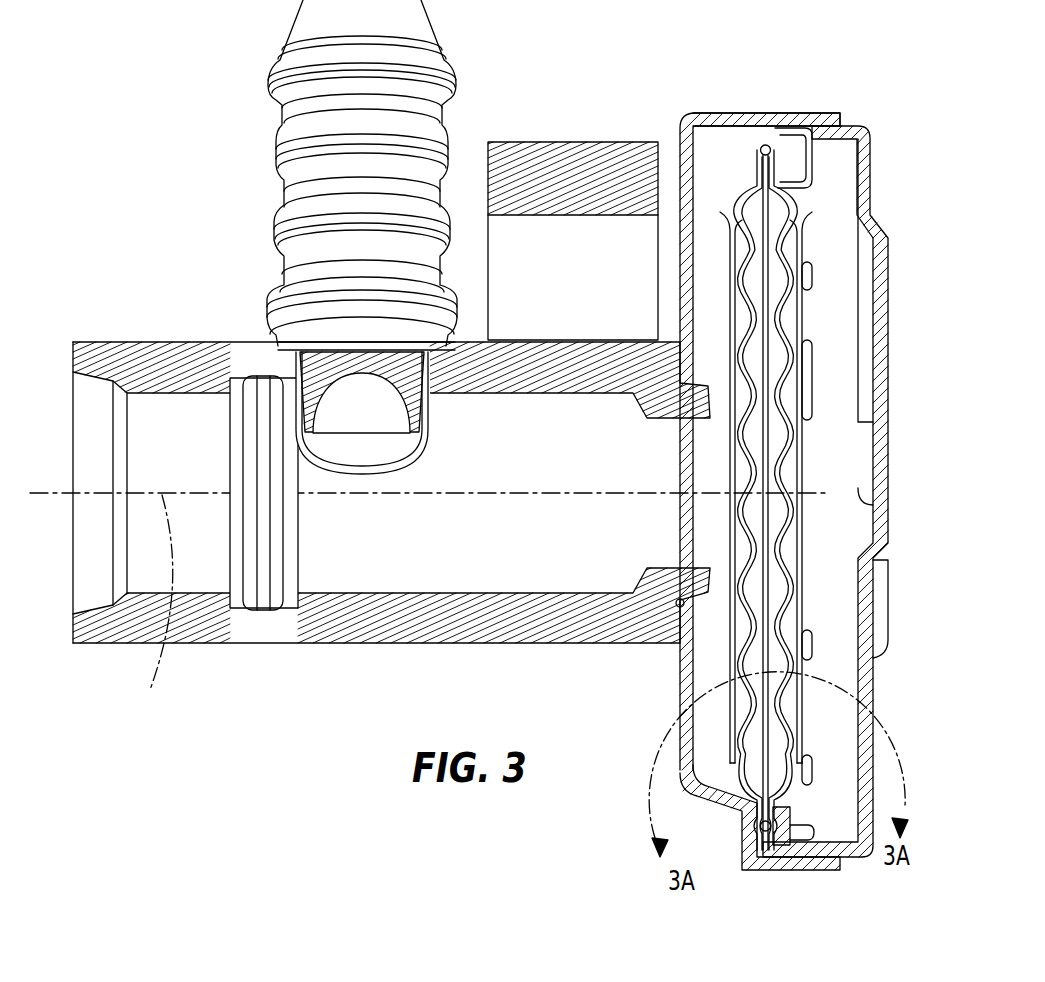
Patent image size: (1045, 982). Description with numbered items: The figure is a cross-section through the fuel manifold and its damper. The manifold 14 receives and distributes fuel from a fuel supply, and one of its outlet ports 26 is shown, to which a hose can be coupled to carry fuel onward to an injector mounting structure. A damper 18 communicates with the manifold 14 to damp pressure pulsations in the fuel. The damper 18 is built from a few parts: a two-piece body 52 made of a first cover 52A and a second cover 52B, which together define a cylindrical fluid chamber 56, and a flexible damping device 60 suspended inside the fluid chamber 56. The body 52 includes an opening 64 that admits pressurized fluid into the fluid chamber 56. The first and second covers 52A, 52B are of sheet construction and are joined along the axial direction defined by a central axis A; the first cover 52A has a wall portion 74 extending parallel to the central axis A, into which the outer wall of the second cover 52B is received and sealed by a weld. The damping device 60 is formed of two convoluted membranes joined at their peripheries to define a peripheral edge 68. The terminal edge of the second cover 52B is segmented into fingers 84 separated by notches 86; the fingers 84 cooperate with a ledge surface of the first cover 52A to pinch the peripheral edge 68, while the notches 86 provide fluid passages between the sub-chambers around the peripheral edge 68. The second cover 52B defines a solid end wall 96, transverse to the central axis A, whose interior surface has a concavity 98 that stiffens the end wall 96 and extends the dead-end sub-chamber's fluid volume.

The manifold 14 is at (391, 429).
The damper 18 is at (708, 95).
The outlet port 26 is at (288, 173).
The two-piece body 52 is at (825, 5).
The first cover 52A is at (748, 113).
The second cover 52B is at (850, 131).
The fluid chamber 56 is at (722, 245).
The damping device 60 is at (812, 210).
The opening 64 is at (672, 625).
The peripheral edge 68 is at (760, 870).
The wall portion 74 is at (805, 875).
The fingers 84 is at (783, 823).
The notches 86 is at (810, 378).
The end wall 96 is at (862, 700).
The concavity 98 is at (888, 528).
The central axis A is at (151, 606).